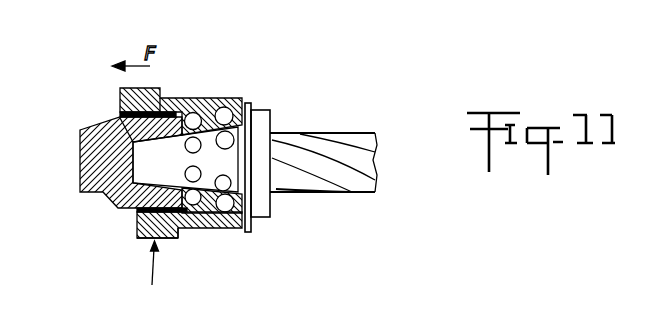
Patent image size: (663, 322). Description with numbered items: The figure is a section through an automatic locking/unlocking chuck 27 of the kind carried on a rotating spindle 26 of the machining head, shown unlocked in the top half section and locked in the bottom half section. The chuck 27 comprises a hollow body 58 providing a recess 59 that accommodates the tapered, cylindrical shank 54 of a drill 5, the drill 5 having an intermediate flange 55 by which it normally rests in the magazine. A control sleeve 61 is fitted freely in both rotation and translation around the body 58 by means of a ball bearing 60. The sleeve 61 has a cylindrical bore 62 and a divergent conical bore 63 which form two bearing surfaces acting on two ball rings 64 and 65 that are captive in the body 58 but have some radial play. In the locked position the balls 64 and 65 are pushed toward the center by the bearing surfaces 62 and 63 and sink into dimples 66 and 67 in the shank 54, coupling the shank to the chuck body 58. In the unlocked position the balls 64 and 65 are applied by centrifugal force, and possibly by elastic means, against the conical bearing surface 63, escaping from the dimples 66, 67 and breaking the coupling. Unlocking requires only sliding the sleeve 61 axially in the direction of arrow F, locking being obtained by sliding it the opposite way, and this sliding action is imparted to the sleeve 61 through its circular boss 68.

The drill 5 is at (320, 146).
The rotating spindle 26 is at (88, 180).
The chuck 27 is at (148, 274).
The shank 54 is at (120, 212).
The intermediate flange 55 is at (268, 210).
The hollow body 58 is at (131, 129).
The recess 59 is at (118, 120).
The ball bearing 60 is at (145, 239).
The control sleeve 61 is at (181, 87).
The cylindrical bore 62 is at (184, 97).
The divergent conical bore 63 is at (211, 101).
The ball ring 64 is at (181, 243).
The ball ring 65 is at (224, 226).
The dimple 66 is at (187, 148).
The dimple 67 is at (236, 142).
The circular boss 68 is at (165, 240).